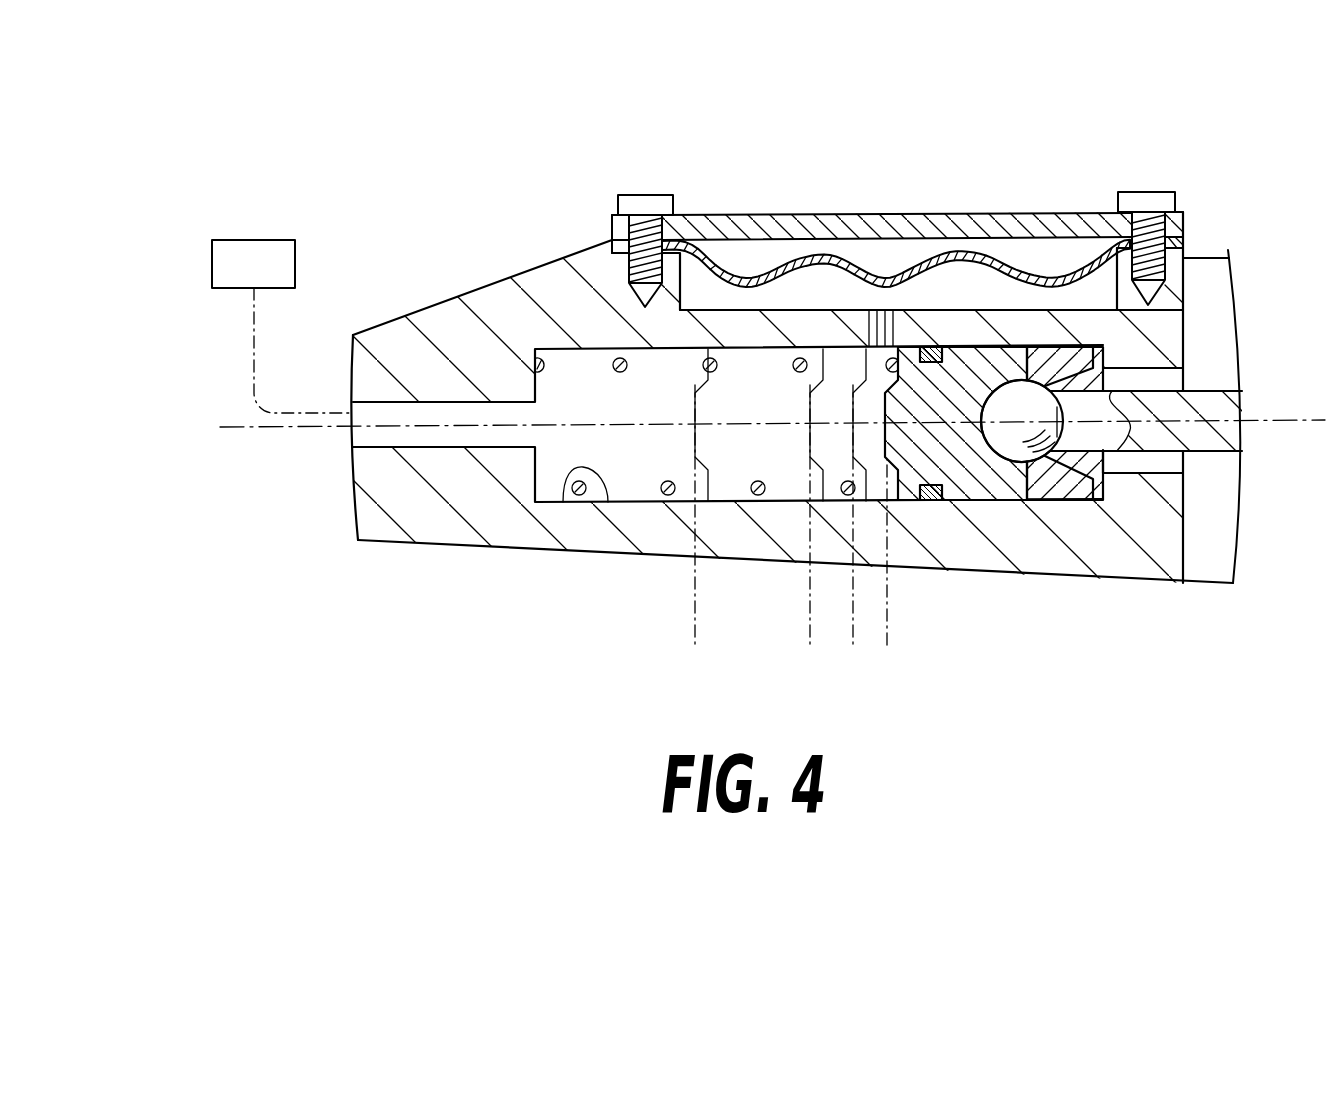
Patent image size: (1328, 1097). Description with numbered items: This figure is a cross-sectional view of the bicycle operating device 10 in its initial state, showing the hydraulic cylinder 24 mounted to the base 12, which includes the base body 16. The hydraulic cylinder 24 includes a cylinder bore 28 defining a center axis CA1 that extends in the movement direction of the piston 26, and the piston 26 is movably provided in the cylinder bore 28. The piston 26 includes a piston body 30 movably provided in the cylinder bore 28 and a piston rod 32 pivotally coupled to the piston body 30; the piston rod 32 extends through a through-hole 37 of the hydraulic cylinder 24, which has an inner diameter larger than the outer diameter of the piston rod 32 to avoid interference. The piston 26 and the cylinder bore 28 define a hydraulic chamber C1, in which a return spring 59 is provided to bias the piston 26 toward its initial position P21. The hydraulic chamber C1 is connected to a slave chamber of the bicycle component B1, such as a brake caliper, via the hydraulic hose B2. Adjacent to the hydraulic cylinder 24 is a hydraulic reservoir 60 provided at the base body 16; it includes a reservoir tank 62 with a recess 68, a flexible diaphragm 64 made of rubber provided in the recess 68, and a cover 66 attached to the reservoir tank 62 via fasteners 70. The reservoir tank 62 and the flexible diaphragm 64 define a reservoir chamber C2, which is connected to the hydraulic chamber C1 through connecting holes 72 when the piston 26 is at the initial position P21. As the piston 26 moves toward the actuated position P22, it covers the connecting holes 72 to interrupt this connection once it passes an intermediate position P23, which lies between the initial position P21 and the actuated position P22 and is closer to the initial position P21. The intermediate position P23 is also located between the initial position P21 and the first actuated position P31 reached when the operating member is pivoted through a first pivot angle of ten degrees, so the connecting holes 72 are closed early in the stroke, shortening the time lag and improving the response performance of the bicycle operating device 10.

The bicycle operating device 10 is at (524, 175).
The base 12 is at (1288, 227).
The base body 16 is at (1236, 241).
The hydraulic cylinder 24 is at (632, 540).
The piston 26 is at (1063, 525).
The cylinder bore 28 is at (570, 503).
The piston body 30 is at (987, 482).
The piston rod 32 is at (1138, 443).
The through-hole 37 is at (1160, 470).
The return spring 59 is at (667, 496).
The hydraulic reservoir 60 is at (900, 209).
The reservoir tank 62 is at (1040, 322).
The flexible diaphragm 64 is at (990, 260).
The cover 66 is at (775, 228).
The recess 68 is at (1114, 284).
The fasteners 70 is at (650, 205).
The connecting holes 72 is at (873, 327).
The bicycle component B1 is at (238, 278).
The hydraulic hose B2 is at (255, 336).
The hydraulic chamber C1 is at (583, 367).
The reservoir chamber C2 is at (940, 280).
The center axis CA1 is at (278, 430).
The initial position P21 is at (887, 620).
The actuated position P22 is at (695, 624).
The intermediate position P23 is at (852, 623).
The first actuated position P31 is at (810, 603).